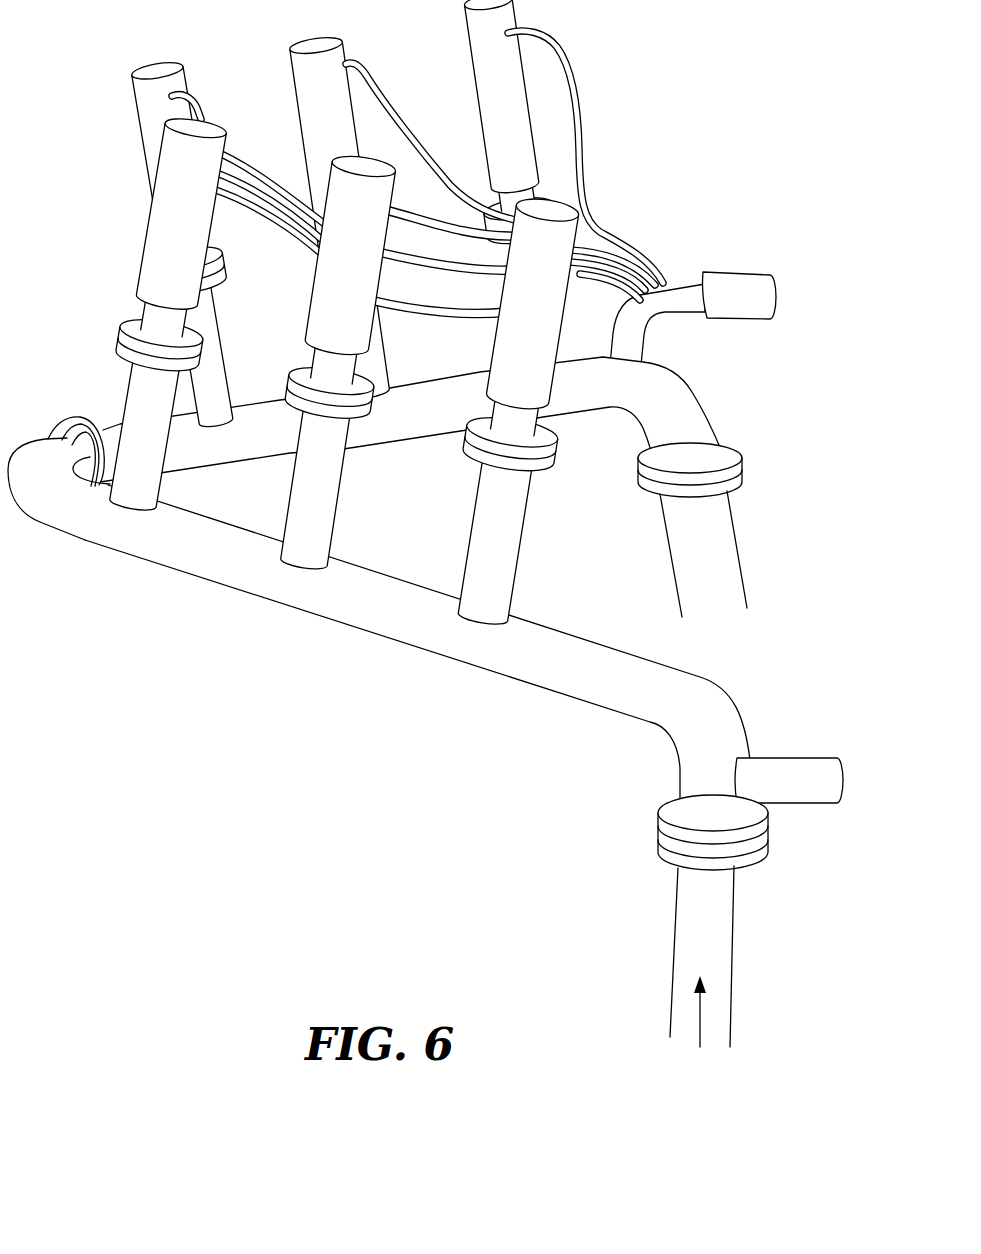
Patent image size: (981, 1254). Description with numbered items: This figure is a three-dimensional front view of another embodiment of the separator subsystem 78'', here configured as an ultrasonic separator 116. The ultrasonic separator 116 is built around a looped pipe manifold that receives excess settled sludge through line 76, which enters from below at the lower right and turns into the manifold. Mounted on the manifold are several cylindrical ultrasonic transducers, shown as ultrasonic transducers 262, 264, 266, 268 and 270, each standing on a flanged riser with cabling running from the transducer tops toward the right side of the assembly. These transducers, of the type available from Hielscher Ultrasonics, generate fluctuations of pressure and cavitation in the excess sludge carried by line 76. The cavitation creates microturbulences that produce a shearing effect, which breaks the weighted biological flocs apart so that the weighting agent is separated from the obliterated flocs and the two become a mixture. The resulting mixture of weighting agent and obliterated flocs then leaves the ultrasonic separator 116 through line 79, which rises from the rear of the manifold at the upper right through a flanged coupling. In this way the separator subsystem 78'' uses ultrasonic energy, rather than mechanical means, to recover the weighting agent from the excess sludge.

The separator subsystem 78'' is at (425, 437).
The ultrasonic separator 116 is at (697, 178).
The ultrasonic transducer 262 is at (547, 340).
The ultrasonic transducer 264 is at (365, 294).
The ultrasonic transducer 266 is at (200, 241).
The ultrasonic transducer 268 is at (345, 114).
The ultrasonic transducer 270 is at (518, 87).
The line 79 is at (710, 528).
The line 76 is at (684, 907).